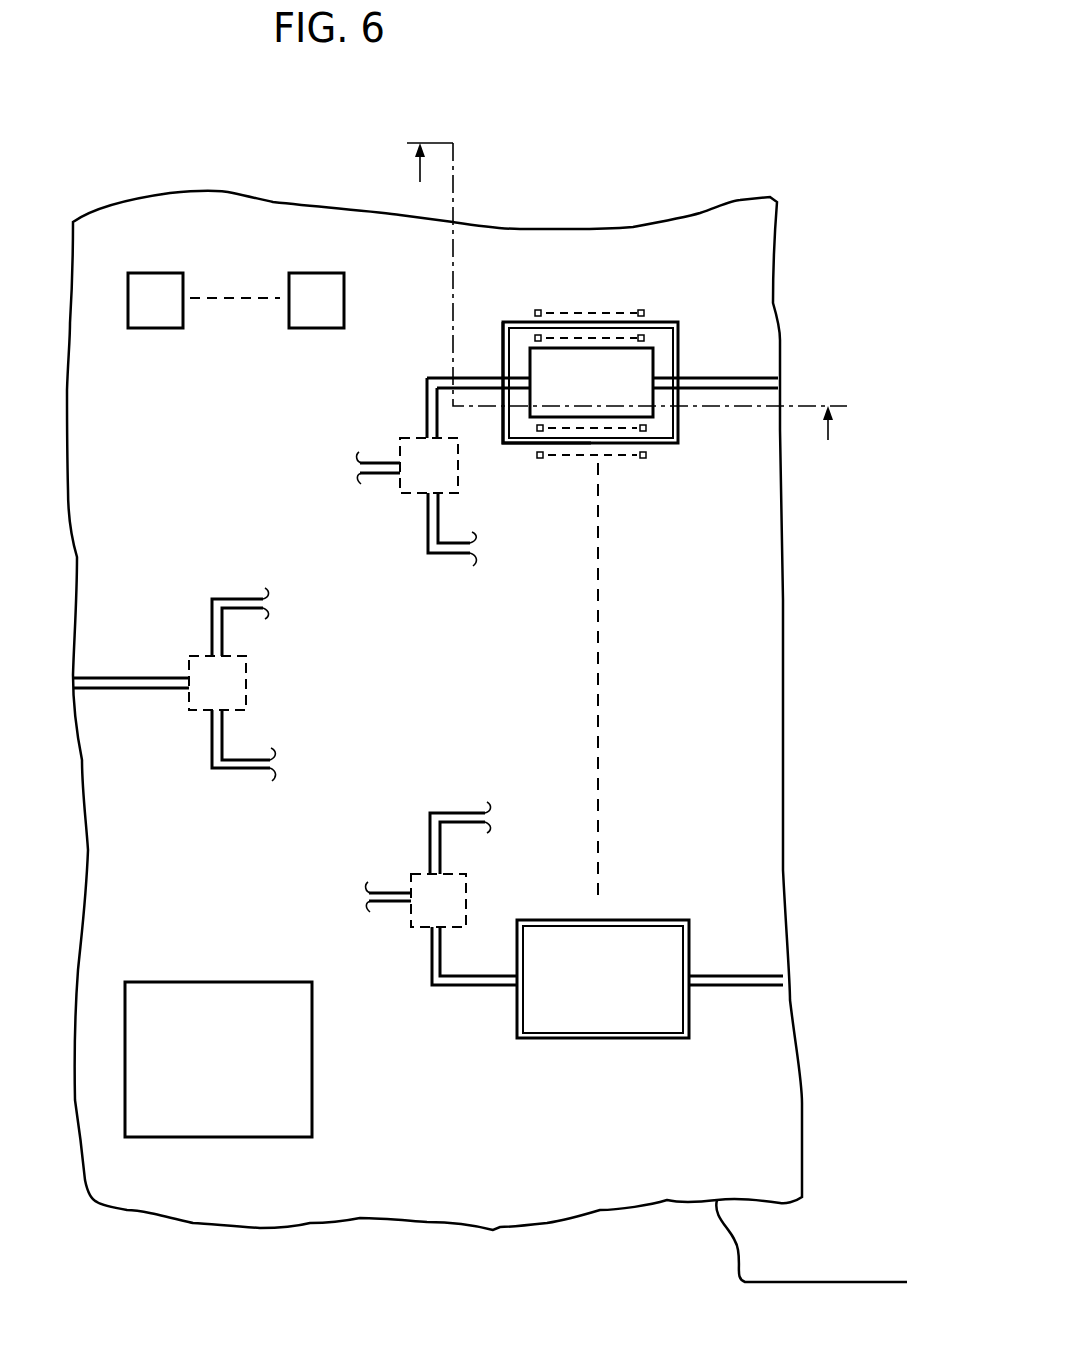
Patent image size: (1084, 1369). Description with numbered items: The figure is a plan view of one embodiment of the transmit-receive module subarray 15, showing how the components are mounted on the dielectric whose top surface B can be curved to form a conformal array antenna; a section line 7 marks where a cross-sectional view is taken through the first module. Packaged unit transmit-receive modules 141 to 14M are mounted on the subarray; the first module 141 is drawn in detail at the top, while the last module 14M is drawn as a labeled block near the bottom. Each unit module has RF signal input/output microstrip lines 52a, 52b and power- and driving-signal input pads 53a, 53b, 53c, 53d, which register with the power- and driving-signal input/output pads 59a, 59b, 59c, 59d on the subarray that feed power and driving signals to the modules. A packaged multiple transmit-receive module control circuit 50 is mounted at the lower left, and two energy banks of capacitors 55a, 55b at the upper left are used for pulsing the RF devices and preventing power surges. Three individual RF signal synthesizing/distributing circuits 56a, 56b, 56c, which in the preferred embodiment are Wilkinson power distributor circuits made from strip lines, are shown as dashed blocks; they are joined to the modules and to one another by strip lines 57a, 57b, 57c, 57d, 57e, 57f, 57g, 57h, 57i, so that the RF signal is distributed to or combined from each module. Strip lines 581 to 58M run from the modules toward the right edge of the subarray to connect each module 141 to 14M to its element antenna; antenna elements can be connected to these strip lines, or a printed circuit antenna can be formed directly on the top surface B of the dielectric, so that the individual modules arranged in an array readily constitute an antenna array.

The transmit-receive module subarray 15 is at (547, 1223).
The top surface of dielectric layer B is at (811, 1241).
The section line 7- 7 is at (627, 308).
The energy bank of capacitors 55a is at (141, 273).
The energy bank of capacitors 55b is at (292, 273).
The strip line 581 is at (737, 380).
The packaged unit transmit-receive module 141 is at (668, 322).
The RF signal input/output microstrip line 52a is at (512, 322).
The RF signal input/output microstrip line 52b is at (673, 355).
The power- and driving-signal input pad 53a is at (543, 336).
The power- and driving-signal input pad 53b is at (647, 338).
The power- and driving-signal input pad 53c is at (540, 431).
The power- and driving-signal input pad 53d is at (647, 428).
The power- and driving-signal input/output pad 59a is at (538, 309).
The power- and driving-signal input/output pad 59b is at (641, 309).
The power- and driving-signal input/output pad 59c is at (540, 458).
The power- and driving-signal input/output pad 59d is at (647, 455).
The RF signal synthesizing/distributing circuit 56a is at (189, 657).
The RF signal synthesizing/distributing circuit 56b is at (399, 438).
The RF signal synthesizing/distributing circuit 56c is at (410, 874).
The strip line 57a is at (118, 679).
The strip line 57b is at (212, 604).
The strip line 57c is at (212, 740).
The strip line 57d is at (372, 463).
The strip line 57e is at (425, 412).
The strip line 57f is at (428, 523).
The strip line 57g is at (369, 893).
The strip line 57h is at (430, 823).
The strip line 57i is at (432, 957).
The packaged unit transmit-receive module 14M is at (690, 1024).
The strip line 58M is at (733, 975).
The packaged multiple transmit-receive module control circuit 50 is at (241, 1137).